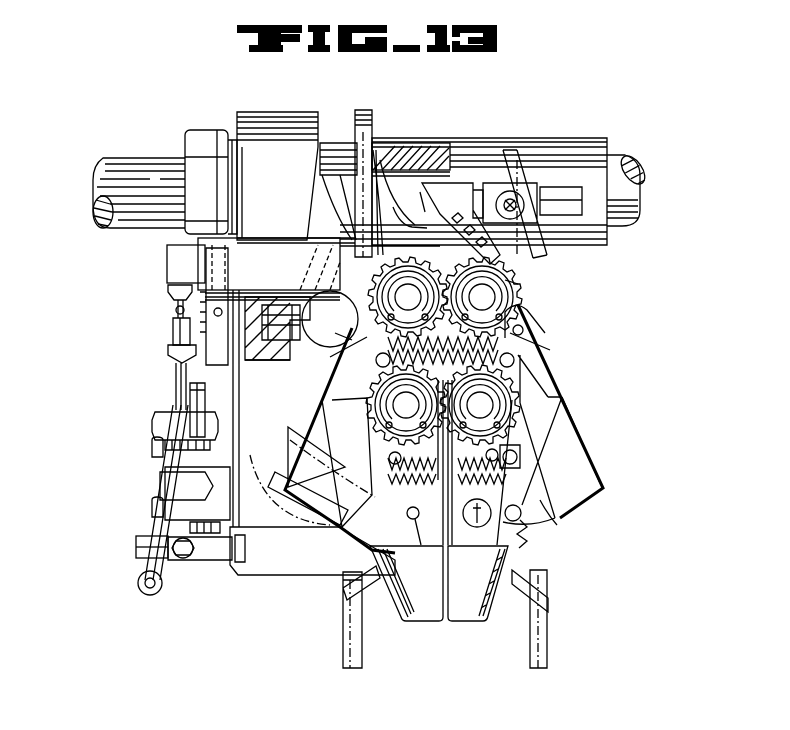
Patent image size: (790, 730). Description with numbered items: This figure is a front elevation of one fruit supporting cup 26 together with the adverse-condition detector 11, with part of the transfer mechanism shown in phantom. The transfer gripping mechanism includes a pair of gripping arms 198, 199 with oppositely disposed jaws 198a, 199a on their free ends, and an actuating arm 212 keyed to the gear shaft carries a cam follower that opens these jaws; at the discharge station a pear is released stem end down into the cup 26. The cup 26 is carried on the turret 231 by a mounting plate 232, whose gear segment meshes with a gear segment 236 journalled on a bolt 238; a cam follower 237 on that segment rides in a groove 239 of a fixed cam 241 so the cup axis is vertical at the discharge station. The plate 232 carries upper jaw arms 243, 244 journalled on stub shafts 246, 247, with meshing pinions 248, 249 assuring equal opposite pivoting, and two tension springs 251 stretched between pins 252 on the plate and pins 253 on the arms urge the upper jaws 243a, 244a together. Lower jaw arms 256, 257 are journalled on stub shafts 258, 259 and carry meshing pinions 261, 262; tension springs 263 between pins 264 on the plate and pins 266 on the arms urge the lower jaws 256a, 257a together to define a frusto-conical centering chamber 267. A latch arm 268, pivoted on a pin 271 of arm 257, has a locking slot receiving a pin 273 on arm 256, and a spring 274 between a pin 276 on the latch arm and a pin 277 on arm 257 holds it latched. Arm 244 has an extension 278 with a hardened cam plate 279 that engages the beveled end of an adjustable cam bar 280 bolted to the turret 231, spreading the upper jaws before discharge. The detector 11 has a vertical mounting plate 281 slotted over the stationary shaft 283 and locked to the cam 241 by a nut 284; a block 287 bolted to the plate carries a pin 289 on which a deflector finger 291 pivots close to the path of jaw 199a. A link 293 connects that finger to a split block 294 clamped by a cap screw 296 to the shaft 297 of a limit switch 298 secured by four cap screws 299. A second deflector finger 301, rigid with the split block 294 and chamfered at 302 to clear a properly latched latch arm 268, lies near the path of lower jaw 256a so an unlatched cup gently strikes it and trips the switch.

The adverse-condition detector 11 is at (160, 364).
The fruit supporting cup 26 is at (611, 426).
The gripping arm 198 is at (537, 257).
The jaw 198a is at (517, 160).
The gripping arm 199 is at (343, 598).
The jaw 199a is at (370, 135).
The actuating arm 212 is at (336, 540).
The turret 231 is at (432, 160).
The mounting plate 232 is at (443, 354).
The gear segment 236 is at (352, 298).
The cam follower 237 is at (282, 352).
The bolt 238 is at (318, 341).
The groove 239 is at (267, 381).
The fixed cam 241 is at (270, 188).
The upper jaw arm 243 is at (332, 397).
The upper jaw 243a is at (292, 438).
The upper jaw arm 244 is at (552, 377).
The upper jaw 244a is at (580, 455).
The stub shaft 246 is at (412, 294).
The stub shaft 247 is at (486, 295).
The pinion 248 is at (347, 276).
The pinion 249 is at (527, 303).
The tension spring 251 is at (345, 360).
The pin 252 is at (543, 355).
The pin 253 is at (549, 320).
The lower jaw arm 256 is at (408, 452).
The lower jaw 256a is at (400, 606).
The lower jaw arm 257 is at (464, 452).
The lower jaw 257a is at (476, 622).
The stub shaft 258 is at (352, 400).
The stub shaft 259 is at (540, 389).
The pinion 261 is at (382, 400).
The pinion 262 is at (562, 398).
The tension spring 263 is at (400, 498).
The pin 264 is at (380, 483).
The pin 266 is at (390, 456).
The frusto-conical centering chamber 267 is at (428, 623).
The latch arm 268 is at (292, 452).
The pin 271 is at (522, 510).
The pin 273 is at (418, 522).
The spring 274 is at (527, 540).
The pin 276 is at (557, 520).
The pin 277 is at (520, 570).
The extension 278 is at (403, 210).
The cam plate 279 is at (402, 194).
The adjustable cam bar 280 is at (438, 205).
The mounting plate 281 is at (232, 398).
The stationary shaft 283 is at (133, 180).
The nut 284 is at (205, 150).
The block 287 is at (196, 282).
The pin 289 is at (174, 303).
The deflector finger 291 is at (297, 246).
The link 293 is at (160, 535).
The split block 294 is at (143, 548).
The cap screw 296 is at (187, 558).
The shaft 297 is at (236, 540).
The limit switch 298 is at (168, 450).
The cap screw 299 is at (154, 440).
The deflector finger 301 is at (247, 569).
The chamfer 302 is at (368, 536).